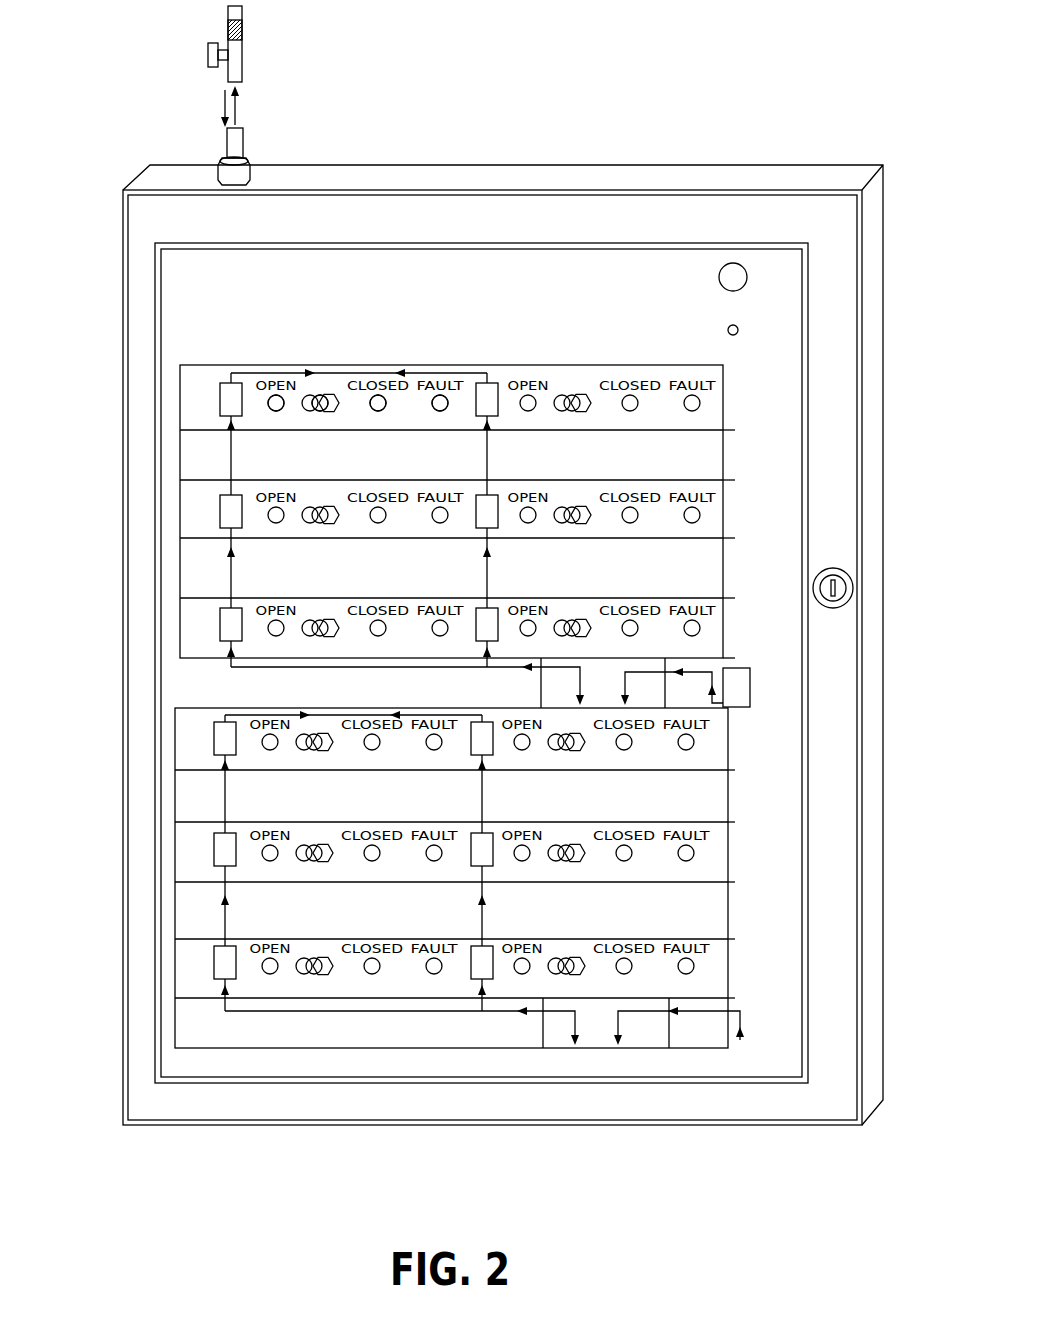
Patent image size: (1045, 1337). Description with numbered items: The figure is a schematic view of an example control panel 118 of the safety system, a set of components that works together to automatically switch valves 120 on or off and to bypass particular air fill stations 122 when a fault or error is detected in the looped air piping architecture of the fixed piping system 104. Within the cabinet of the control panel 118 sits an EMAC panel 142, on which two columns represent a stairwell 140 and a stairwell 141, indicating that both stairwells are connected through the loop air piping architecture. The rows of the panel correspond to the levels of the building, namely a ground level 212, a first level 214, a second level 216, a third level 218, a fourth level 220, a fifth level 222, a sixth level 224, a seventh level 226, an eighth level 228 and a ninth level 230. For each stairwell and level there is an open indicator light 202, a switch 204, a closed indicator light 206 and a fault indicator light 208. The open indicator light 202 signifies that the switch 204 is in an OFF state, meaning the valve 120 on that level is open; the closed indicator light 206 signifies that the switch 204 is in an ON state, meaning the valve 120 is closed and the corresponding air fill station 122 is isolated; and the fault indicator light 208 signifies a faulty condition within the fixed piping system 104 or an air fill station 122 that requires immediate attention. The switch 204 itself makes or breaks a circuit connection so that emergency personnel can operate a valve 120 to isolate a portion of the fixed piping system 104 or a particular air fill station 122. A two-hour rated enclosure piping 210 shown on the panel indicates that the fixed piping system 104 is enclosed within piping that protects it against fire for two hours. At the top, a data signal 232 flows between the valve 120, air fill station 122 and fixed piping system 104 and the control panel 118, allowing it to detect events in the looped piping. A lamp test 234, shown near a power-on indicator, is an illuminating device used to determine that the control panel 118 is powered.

The control panel 118 is at (760, 182).
The EMAC panel 142 is at (888, 682).
The stairwell 140 is at (340, 343).
The stairwell 141 is at (568, 343).
The air fill stations 122 is at (225, 965).
The valves 120 is at (243, 30).
The fixed piping system 104 is at (243, 66).
The data signal 232 is at (224, 101).
The lamp test 234 is at (720, 279).
The open indicator light 202 is at (276, 411).
The switch 204 is at (330, 410).
The closed indicator light 206 is at (378, 411).
The fault indicator light 208 is at (440, 411).
The two-hour rated enclosure piping 210 is at (484, 854).
The ground level 212 is at (900, 1010).
The level 1 214 is at (900, 938).
The level 2 216 is at (900, 878).
The level 3 218 is at (903, 820).
The level 4 220 is at (903, 765).
The level 5 222 is at (903, 650).
The level 6 224 is at (905, 588).
The level 7 226 is at (903, 525).
The level 8 228 is at (898, 473).
The level 9 230 is at (903, 422).